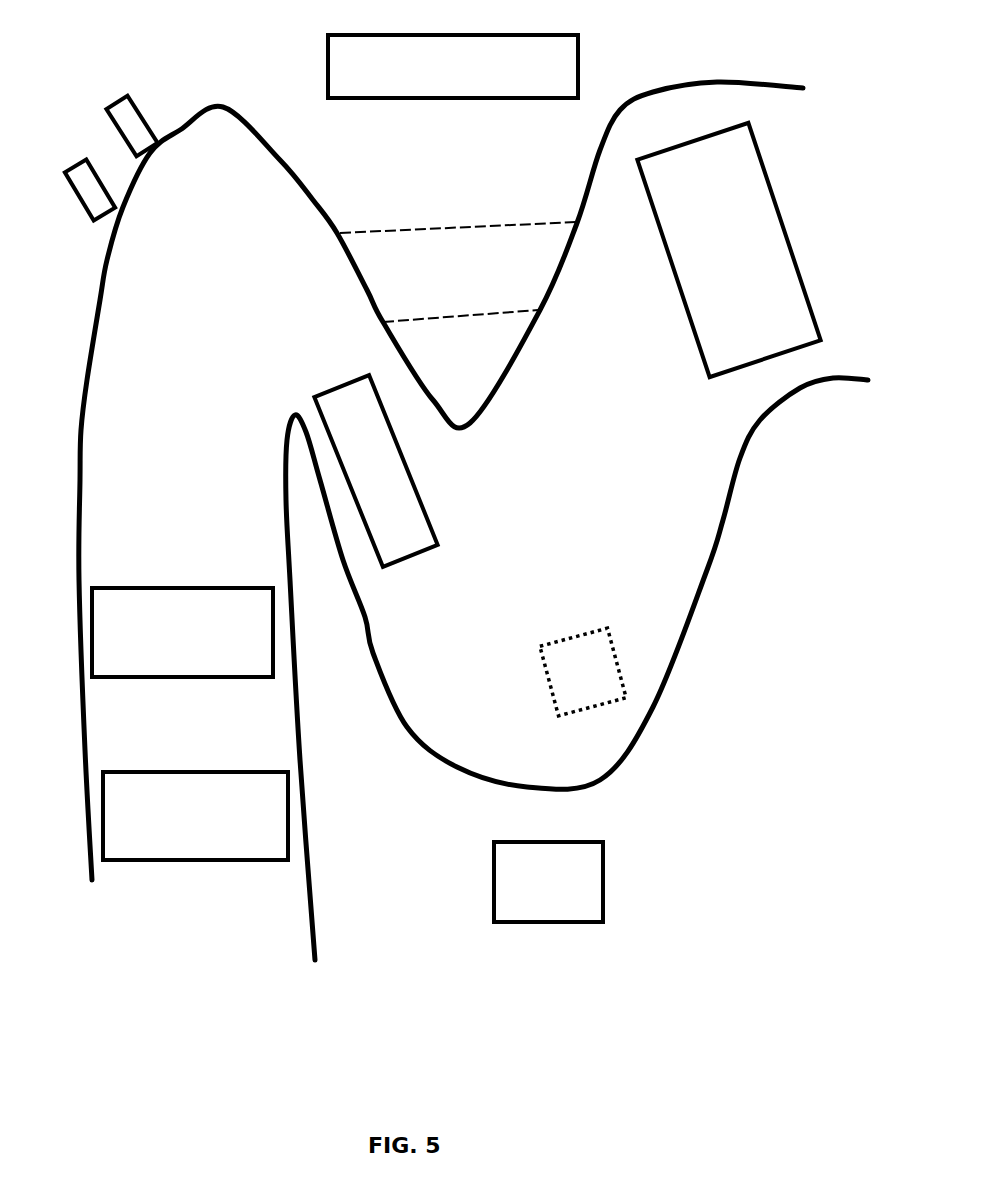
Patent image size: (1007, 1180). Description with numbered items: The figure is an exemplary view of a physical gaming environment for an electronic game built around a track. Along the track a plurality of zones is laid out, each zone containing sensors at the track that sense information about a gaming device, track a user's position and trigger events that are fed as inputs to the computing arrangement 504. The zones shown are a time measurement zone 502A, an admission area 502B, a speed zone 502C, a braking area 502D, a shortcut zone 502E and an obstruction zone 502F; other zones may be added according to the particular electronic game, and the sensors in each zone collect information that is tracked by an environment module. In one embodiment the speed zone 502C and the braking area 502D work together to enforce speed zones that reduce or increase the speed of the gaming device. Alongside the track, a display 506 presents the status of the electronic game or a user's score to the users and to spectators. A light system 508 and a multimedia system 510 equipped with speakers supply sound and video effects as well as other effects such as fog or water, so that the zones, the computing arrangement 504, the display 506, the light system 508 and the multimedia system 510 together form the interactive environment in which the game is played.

The time measurement zone 502A is at (288, 830).
The admission area 502B is at (275, 675).
The speed zone 502C is at (377, 557).
The braking area 502D is at (627, 697).
The shortcut zone 502E is at (440, 227).
The obstruction zone 502F is at (753, 367).
The computing arrangement 504 is at (603, 878).
The display 506 is at (578, 60).
The light system 508 is at (70, 213).
The multimedia system 510 is at (147, 103).